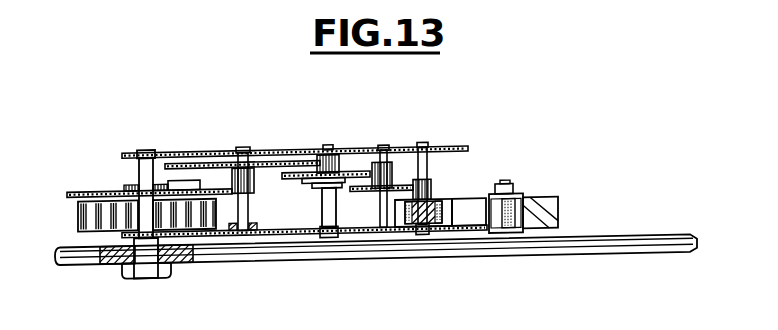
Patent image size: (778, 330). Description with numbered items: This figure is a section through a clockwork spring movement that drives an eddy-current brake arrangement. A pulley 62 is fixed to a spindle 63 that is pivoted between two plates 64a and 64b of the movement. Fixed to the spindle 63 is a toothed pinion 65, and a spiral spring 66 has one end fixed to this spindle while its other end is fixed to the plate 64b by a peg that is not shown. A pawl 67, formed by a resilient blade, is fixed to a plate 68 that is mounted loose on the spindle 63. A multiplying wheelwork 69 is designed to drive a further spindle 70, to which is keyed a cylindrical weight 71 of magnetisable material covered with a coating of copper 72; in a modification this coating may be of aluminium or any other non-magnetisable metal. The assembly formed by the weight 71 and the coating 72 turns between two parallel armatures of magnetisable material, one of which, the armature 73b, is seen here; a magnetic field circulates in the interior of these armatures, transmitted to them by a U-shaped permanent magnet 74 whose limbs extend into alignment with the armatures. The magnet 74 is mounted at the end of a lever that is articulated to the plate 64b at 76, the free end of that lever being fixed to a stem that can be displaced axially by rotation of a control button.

The pulley 62 is at (607, 250).
The spindle 63 is at (147, 250).
The plate 64a is at (457, 150).
The plate 64b is at (288, 234).
The toothed pinion 65 is at (128, 182).
The spiral spring 66 is at (82, 214).
The pawl 67 is at (187, 178).
The plate 68 is at (82, 188).
The multiplying wheelwork 69 is at (310, 147).
The spindle 70 is at (420, 165).
The cylindrical weight 71 is at (412, 229).
The coating of copper 72 is at (447, 229).
The armature 73b is at (468, 206).
The U-shaped permanent magnet 74 is at (558, 214).
The articulation 76 is at (515, 192).